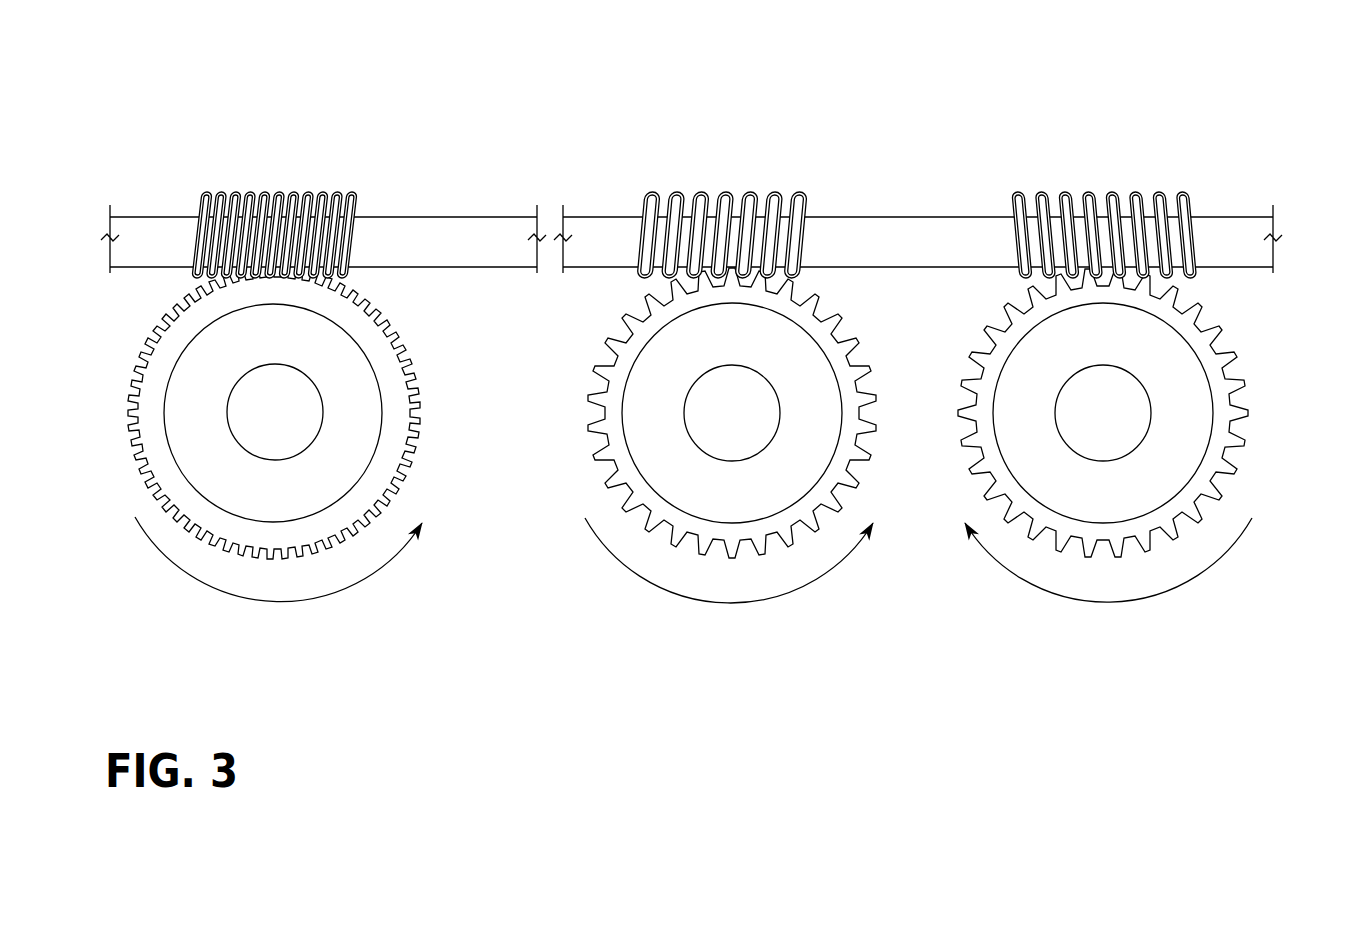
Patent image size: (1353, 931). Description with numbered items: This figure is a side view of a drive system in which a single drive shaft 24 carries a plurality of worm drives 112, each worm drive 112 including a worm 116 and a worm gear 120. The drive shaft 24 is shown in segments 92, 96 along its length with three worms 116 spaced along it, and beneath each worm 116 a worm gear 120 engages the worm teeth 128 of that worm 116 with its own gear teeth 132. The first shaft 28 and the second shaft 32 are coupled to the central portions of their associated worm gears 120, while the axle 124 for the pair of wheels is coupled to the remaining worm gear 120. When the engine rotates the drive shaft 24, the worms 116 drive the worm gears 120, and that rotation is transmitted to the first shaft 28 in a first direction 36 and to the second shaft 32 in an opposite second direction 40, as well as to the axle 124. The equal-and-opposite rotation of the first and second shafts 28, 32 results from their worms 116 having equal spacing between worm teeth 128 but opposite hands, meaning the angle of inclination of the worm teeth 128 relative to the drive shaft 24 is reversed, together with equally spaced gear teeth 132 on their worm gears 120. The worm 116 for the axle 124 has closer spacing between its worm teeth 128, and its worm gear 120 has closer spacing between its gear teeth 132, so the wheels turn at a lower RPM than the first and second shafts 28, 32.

The drive shaft 24 is at (691, 193).
The first shaft 28 is at (758, 393).
The second shaft 32 is at (1113, 395).
The first direction 36 is at (723, 598).
The second direction 40 is at (1137, 598).
The first shaft segment 92 is at (402, 217).
The second shaft segment 96 is at (902, 217).
The worm drives 112 is at (197, 280).
The worm 116 is at (280, 187).
The worm gear 120 is at (138, 442).
The axle 124 is at (302, 395).
The worm teeth 128 is at (253, 190).
The gear teeth 132 is at (420, 433).